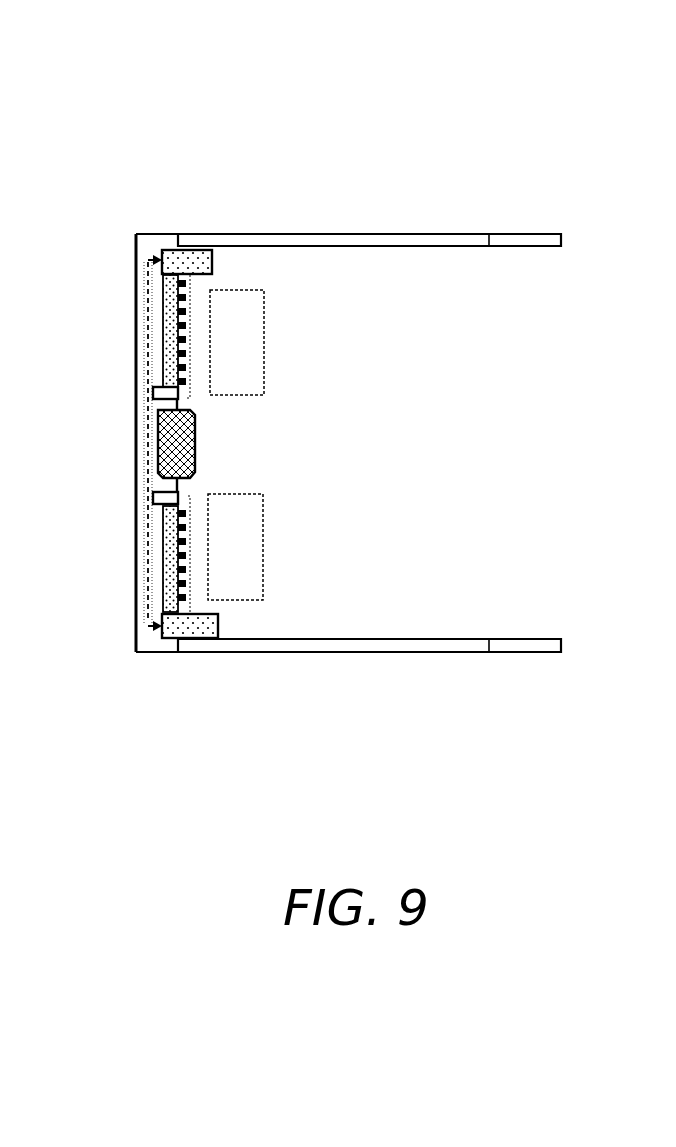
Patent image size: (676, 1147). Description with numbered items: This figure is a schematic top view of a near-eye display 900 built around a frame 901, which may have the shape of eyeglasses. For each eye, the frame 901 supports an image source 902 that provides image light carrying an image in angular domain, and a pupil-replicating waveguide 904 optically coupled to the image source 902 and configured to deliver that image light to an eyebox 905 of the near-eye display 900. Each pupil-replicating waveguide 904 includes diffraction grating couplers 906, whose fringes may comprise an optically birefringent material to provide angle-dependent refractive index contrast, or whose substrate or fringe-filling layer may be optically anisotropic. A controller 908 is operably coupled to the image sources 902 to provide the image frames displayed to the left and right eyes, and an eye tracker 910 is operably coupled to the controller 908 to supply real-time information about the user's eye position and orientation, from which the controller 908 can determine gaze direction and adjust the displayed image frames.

The near-eye display 900 is at (110, 96).
The frame 901 is at (460, 232).
The image source 902 is at (203, 250).
The pupil-replicating waveguide 904 is at (165, 297).
The eyebox 905 is at (240, 331).
The diffraction grating couplers 906 is at (165, 334).
The controller 908 is at (160, 445).
The eye tracker 910 is at (155, 396).